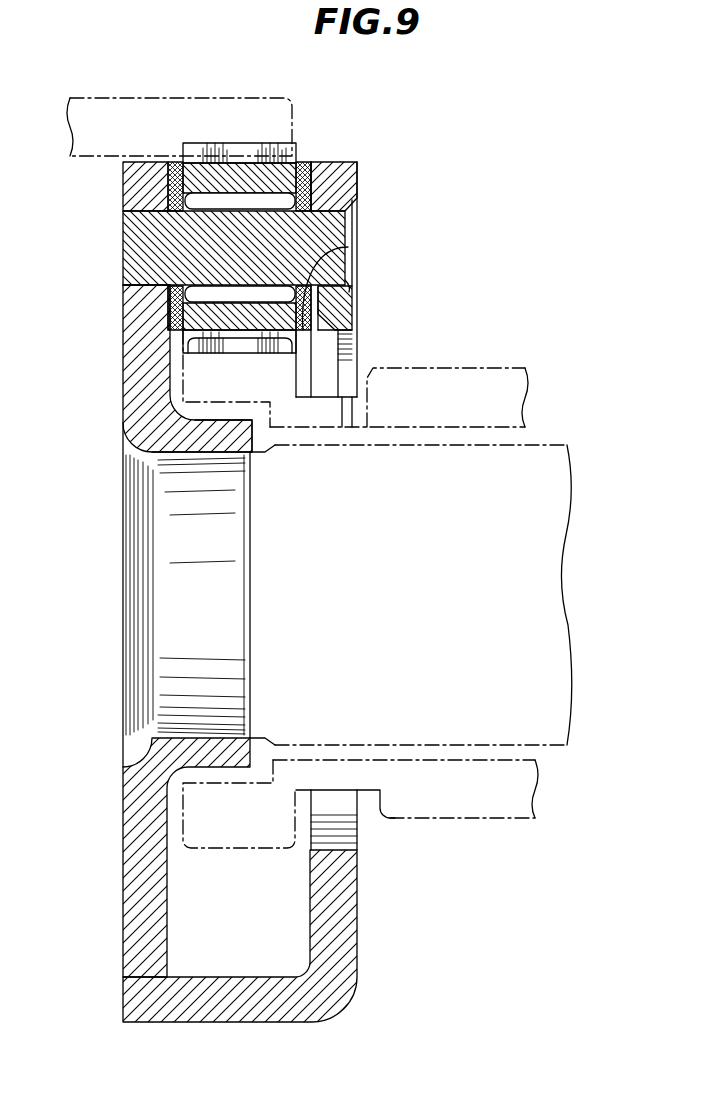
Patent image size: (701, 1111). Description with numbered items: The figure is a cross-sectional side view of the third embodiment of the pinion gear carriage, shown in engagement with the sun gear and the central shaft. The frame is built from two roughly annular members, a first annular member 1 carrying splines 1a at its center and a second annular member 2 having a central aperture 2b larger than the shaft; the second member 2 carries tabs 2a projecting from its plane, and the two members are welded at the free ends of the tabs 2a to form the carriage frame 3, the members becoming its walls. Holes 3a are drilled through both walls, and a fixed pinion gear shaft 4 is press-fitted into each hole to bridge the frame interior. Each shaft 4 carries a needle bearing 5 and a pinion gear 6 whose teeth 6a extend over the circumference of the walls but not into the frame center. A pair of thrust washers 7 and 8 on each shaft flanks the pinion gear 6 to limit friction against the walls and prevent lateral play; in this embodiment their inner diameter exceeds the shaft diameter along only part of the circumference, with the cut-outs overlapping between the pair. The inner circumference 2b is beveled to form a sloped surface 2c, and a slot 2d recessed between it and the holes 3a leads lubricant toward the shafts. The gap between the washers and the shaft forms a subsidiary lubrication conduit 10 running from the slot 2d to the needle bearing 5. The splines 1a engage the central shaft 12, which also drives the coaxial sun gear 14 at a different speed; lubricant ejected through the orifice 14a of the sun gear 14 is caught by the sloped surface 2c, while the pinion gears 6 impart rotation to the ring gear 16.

The first annular member 1 is at (123, 185).
The splines 1a is at (222, 432).
The second annular member 2 is at (357, 186).
The tabs 2a is at (234, 1022).
The central aperture 2b is at (346, 345).
The sloped surface 2c is at (344, 318).
The slot 2d is at (319, 298).
The carriage frame 3 is at (118, 406).
The holes 3a is at (130, 293).
The pinion gear shaft 4 is at (135, 240).
The needle bearing 5 is at (180, 295).
The pinion gear 6 is at (215, 175).
The teeth 6a is at (302, 162).
The thrust washer 7 is at (306, 163).
The thrust washer 8 is at (310, 163).
The subsidiary lubrication conduit 10 is at (348, 247).
The central shaft 12 is at (540, 447).
The sun gear 14 is at (470, 368).
The orifice 14a is at (352, 412).
The ring gear 16 is at (148, 98).